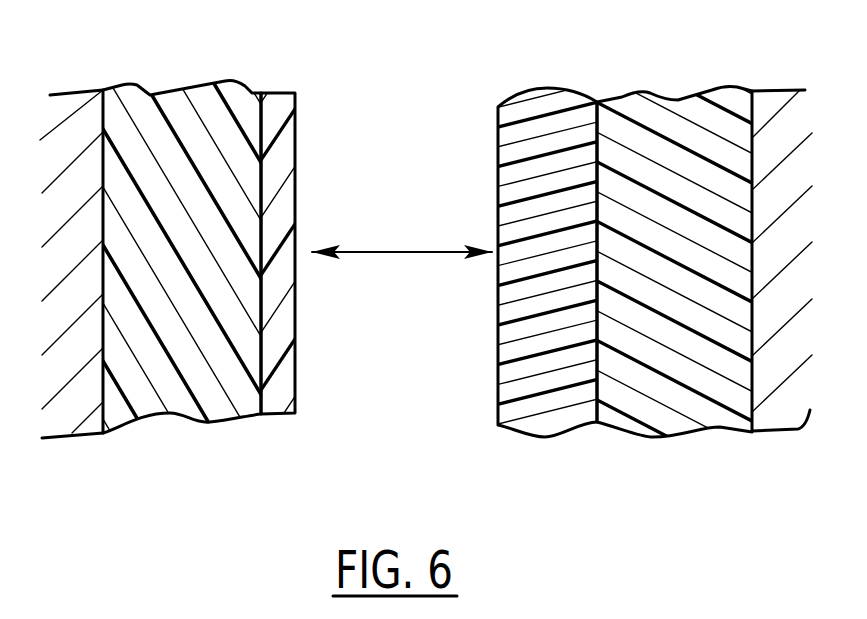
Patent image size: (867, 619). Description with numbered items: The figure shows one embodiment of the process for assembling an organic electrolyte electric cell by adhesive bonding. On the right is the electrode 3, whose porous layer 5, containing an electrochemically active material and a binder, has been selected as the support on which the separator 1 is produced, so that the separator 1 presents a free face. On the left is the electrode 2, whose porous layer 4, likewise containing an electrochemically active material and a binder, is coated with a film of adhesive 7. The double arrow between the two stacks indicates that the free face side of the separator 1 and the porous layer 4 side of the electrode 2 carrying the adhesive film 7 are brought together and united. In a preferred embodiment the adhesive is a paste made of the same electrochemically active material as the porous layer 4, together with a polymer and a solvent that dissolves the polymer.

The separator 1 is at (538, 126).
The electrode 2 is at (169, 309).
The electrode 3 is at (652, 267).
The porous layer 4 is at (188, 114).
The porous layer 5 is at (680, 117).
The film of adhesive 7 is at (263, 113).